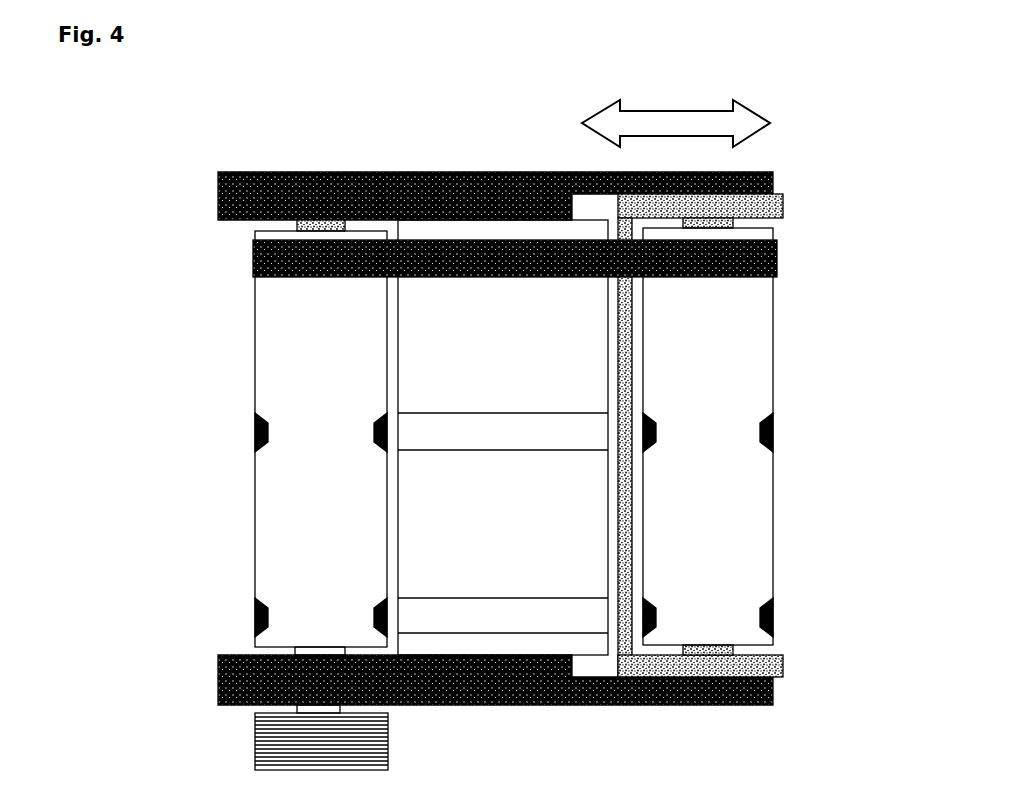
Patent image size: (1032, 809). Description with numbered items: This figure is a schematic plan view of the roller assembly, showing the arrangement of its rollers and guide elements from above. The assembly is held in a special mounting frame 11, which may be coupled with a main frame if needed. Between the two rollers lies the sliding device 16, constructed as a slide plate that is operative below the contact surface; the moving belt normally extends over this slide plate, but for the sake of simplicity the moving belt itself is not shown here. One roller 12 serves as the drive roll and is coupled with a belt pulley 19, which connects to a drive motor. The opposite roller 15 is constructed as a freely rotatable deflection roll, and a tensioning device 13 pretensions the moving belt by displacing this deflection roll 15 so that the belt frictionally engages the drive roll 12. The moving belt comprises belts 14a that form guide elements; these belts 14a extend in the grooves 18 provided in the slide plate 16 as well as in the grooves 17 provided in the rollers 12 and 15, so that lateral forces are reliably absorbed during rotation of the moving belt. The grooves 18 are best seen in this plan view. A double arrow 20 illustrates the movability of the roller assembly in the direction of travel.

The mounting frame 11 is at (240, 176).
The roller 12 is at (268, 300).
The tensioning device 13 is at (785, 200).
The belts 14a is at (777, 252).
The roller 15 is at (762, 338).
The sliding device 16 is at (447, 232).
The grooves 17 is at (258, 438).
The grooves 18 is at (410, 438).
The belt pulley 19 is at (258, 740).
The double arrow 20 is at (665, 122).